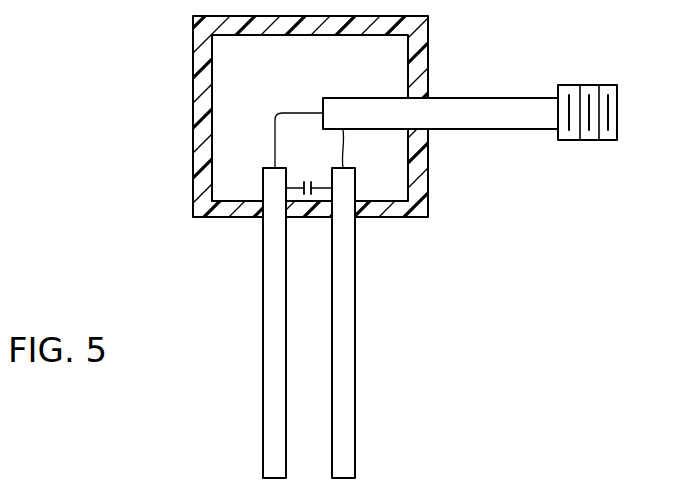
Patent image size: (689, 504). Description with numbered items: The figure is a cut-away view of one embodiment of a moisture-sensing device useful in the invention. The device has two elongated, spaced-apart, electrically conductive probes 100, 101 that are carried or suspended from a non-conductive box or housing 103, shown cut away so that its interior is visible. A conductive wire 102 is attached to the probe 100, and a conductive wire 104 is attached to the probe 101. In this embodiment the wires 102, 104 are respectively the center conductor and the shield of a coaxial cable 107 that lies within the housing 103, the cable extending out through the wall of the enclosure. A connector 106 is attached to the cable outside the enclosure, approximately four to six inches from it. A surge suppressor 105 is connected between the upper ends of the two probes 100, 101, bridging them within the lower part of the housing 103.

The electrically conductive probe 100 is at (264, 378).
The electrically conductive probe 101 is at (357, 378).
The conductive wire 102 is at (275, 118).
The housing 103 is at (193, 118).
The conductive wire 104 is at (347, 142).
The surge suppressor 105 is at (301, 194).
The connector 106 is at (593, 85).
The coaxial cable 107 is at (487, 98).